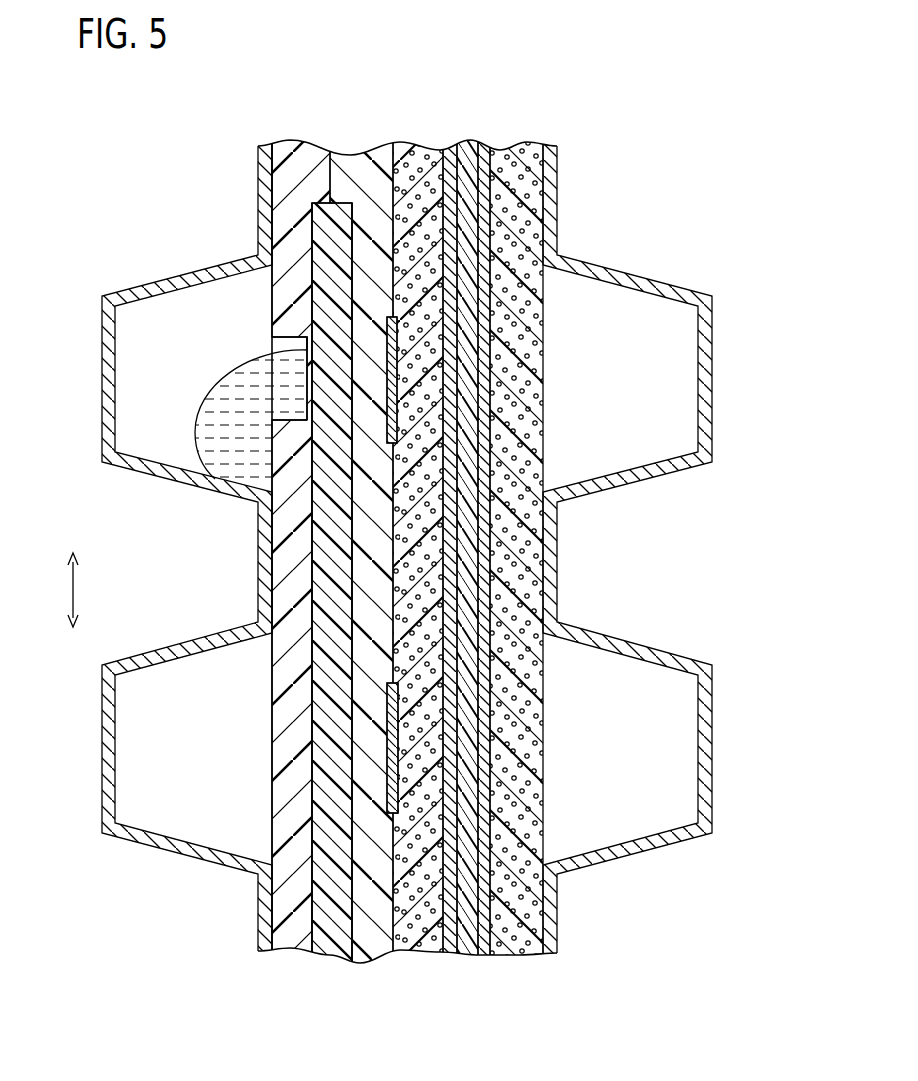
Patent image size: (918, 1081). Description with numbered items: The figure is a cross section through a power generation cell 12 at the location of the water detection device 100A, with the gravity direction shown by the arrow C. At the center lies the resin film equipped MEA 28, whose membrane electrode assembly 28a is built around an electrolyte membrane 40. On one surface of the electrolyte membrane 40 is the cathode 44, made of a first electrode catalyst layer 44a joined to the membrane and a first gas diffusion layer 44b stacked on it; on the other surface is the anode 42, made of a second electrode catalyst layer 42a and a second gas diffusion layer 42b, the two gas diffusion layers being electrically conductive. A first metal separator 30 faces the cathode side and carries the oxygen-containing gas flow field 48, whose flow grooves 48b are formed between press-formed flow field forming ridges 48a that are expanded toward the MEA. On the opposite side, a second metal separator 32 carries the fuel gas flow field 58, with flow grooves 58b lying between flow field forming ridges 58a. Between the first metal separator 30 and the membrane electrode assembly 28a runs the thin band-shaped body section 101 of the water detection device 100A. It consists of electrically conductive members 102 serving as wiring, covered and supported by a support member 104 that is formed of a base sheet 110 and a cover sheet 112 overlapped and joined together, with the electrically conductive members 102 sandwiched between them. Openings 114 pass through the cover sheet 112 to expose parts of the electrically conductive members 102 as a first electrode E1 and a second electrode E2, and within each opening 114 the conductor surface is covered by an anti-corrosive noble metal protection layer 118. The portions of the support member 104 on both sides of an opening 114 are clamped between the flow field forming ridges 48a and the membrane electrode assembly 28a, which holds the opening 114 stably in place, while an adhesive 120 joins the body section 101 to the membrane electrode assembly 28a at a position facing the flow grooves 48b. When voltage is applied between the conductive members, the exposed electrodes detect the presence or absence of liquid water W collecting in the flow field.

The power generation cell 12 is at (170, 101).
The water detection device 100A is at (407, 525).
The body section 101 is at (407, 525).
The resin film equipped MEA 28 is at (416, 525).
The membrane electrode assembly 28a is at (416, 525).
The first metal separator 30 is at (195, 262).
The second metal separator 32 is at (621, 262).
The oxygen-containing gas flow field 48 is at (145, 313).
The flow field forming ridges 48a is at (290, 146).
The flow grooves 48b is at (118, 435).
The fuel gas flow field 58 is at (666, 318).
The flow field forming ridges 58a is at (527, 148).
The flow grooves 58b is at (702, 435).
The electrically conductive members 102 is at (295, 700).
The support member 104 is at (270, 742).
The base sheet 110 is at (365, 765).
The cover sheet 112 is at (288, 813).
The openings 114 is at (290, 345).
The protection layer 118 is at (305, 410).
The adhesive 120 is at (397, 357).
The first electrode E1 is at (225, 378).
The second electrode E2 is at (305, 362).
The liquid water W is at (200, 433).
The arrow C is at (66, 590).
The electrolyte membrane 40 is at (467, 930).
The anode 42 is at (575, 553).
The second electrode catalyst layer 42a is at (490, 905).
The second gas diffusion layer 42b is at (520, 923).
The cathode 44 is at (308, 553).
The first electrode catalyst layer 44a is at (450, 872).
The first gas diffusion layer 44b is at (413, 940).